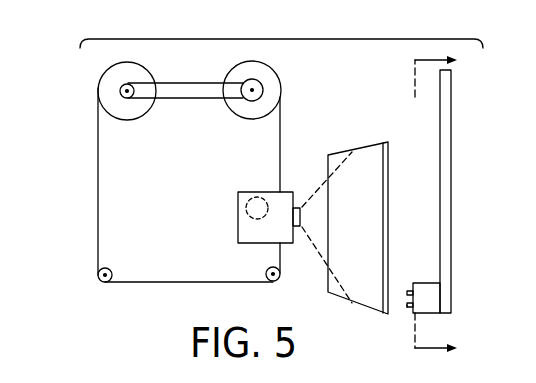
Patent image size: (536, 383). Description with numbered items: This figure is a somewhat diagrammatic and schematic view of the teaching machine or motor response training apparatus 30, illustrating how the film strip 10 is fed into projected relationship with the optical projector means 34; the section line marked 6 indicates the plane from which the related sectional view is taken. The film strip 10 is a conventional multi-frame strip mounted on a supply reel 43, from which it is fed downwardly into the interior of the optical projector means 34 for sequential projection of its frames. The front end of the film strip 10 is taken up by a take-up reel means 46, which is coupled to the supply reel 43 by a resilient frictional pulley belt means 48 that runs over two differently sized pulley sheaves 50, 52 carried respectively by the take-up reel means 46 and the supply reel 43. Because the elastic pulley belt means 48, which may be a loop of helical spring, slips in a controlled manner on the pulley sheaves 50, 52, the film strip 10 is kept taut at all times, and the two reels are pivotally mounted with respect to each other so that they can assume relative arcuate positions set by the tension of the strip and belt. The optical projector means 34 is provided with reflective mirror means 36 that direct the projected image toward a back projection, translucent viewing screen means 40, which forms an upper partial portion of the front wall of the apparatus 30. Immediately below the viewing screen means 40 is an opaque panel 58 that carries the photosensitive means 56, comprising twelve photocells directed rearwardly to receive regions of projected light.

The film strip 10 is at (90, 163).
The teaching machine or motor response training apparatus 30 is at (346, 35).
The optical projector means 34 is at (232, 231).
The reflective mirror means 36 is at (358, 228).
The viewing screen means 40 is at (446, 152).
The supply reel 43 is at (264, 71).
The take-up reel means 46 is at (139, 69).
The pulley belt means 48 is at (190, 100).
The pulley sheave 50 is at (131, 99).
The pulley sheave 52 is at (263, 89).
The photosensitive means 56 is at (405, 316).
The opaque panel 58 is at (410, 283).
The section line 6- 6 is at (445, 208).